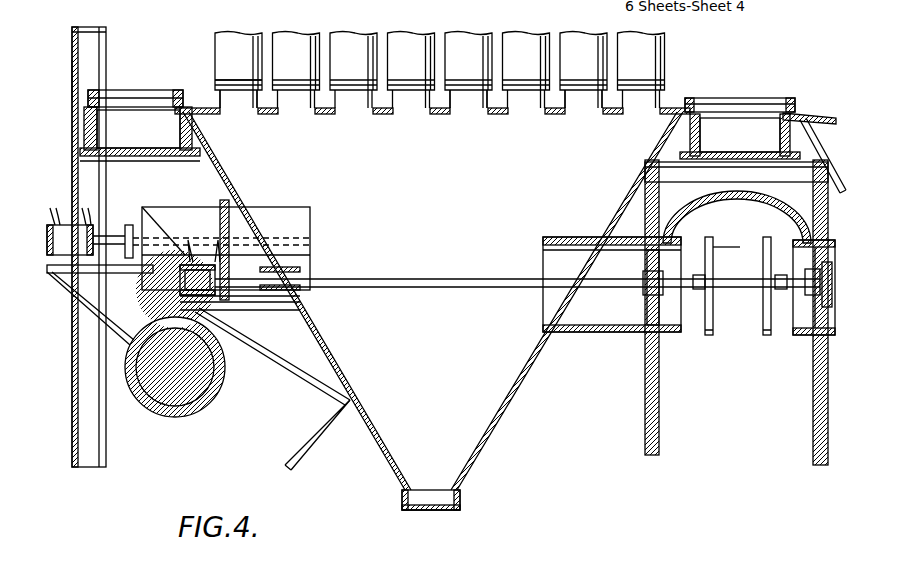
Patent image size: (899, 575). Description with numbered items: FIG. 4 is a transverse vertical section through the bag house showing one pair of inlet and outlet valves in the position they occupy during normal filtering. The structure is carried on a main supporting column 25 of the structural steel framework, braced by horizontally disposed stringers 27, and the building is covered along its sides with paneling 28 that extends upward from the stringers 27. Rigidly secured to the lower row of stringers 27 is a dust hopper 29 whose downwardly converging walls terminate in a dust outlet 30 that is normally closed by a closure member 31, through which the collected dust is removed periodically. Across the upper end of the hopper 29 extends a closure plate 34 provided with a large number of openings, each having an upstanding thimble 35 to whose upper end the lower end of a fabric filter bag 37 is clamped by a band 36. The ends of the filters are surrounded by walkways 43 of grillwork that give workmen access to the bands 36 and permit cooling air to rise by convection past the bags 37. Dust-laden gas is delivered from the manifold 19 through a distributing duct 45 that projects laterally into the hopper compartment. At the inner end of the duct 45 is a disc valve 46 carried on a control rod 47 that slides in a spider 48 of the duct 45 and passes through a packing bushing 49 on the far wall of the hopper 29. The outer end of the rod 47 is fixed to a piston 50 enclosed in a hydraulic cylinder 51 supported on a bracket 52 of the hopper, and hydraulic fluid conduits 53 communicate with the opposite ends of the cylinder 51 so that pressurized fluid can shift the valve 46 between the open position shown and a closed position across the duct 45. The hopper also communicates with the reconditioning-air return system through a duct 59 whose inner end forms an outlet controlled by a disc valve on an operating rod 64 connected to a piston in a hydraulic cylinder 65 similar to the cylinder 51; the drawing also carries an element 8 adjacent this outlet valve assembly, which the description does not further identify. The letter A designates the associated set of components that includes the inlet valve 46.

The control housing 8 is at (312, 258).
The manifold 19 is at (660, 432).
The main supporting column 25 is at (106, 452).
The stringer 27 is at (168, 150).
The paneling 28 is at (72, 105).
The dust hopper 29 is at (495, 428).
The dust outlet 30 is at (462, 500).
The closure member 31 is at (433, 512).
The closure plate 34 is at (400, 115).
The thimble 35 is at (225, 100).
The band 36 is at (230, 80).
The fabric filter bag 37 is at (220, 42).
The walkway 43 is at (122, 97).
The distributing duct 45 is at (800, 222).
The disc valve 46 is at (762, 352).
The control rod 47 is at (458, 290).
The spider 48 is at (650, 313).
The packing bushing 49 is at (293, 318).
The piston 50 is at (180, 277).
The hydraulic cylinder 51 is at (182, 290).
The bracket 52 is at (272, 310).
The hydraulic fluid conduit 53 is at (216, 262).
The duct 59 is at (280, 212).
The operating rod 64 is at (110, 237).
The hydraulic cylinder 65 is at (68, 225).
The inlet valve component set A is at (763, 271).